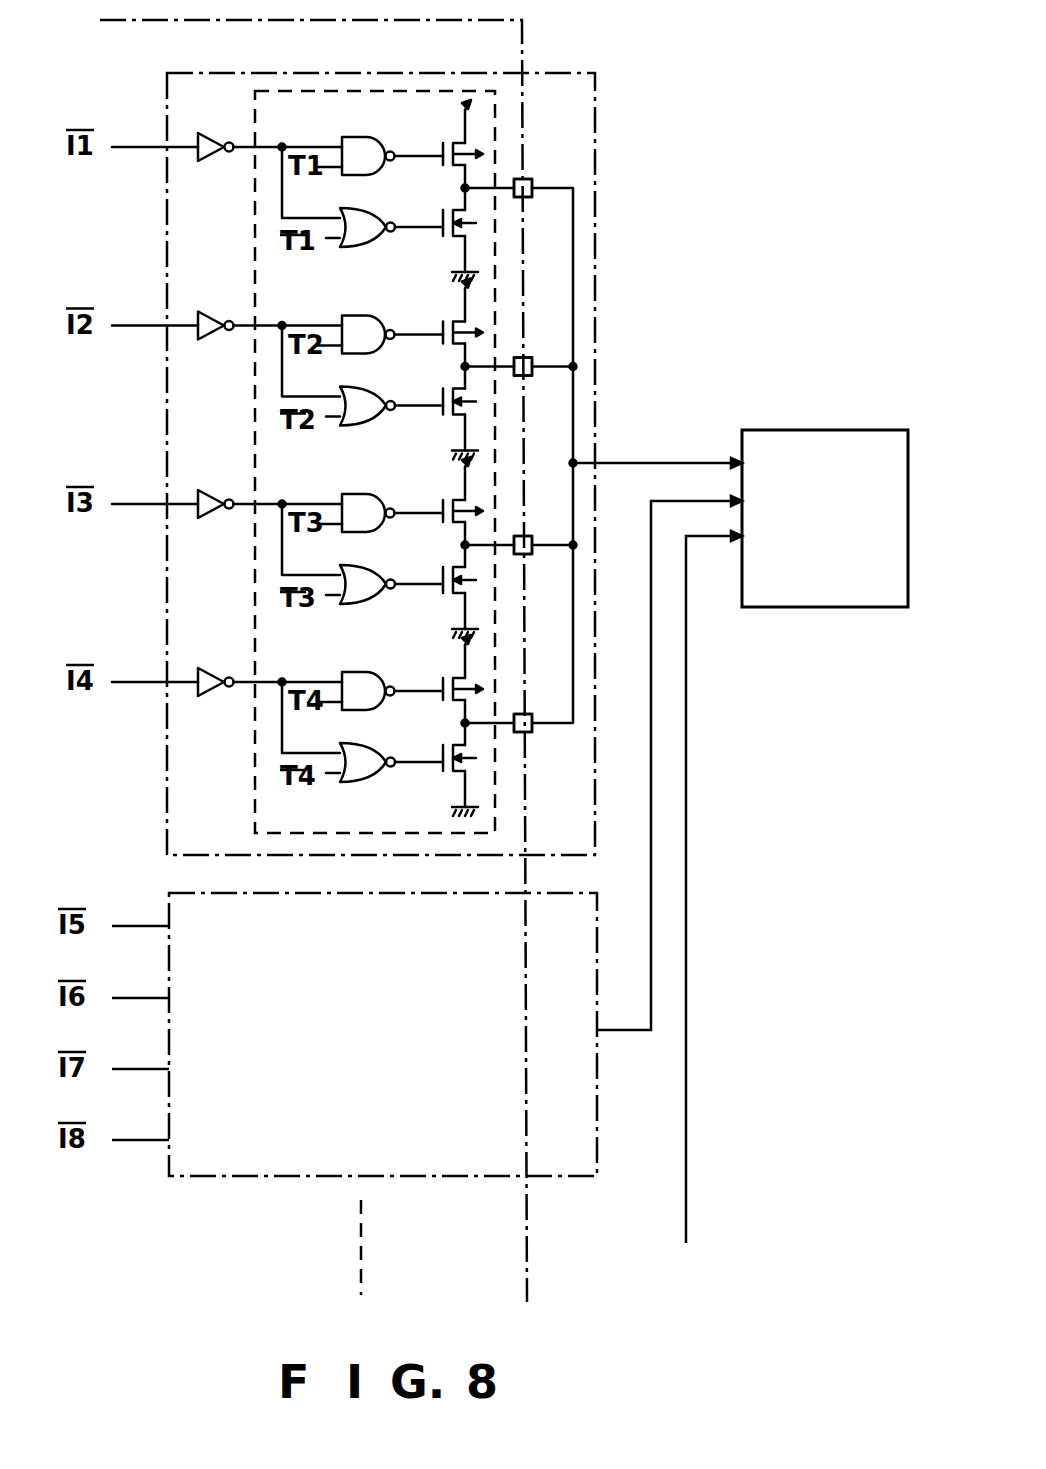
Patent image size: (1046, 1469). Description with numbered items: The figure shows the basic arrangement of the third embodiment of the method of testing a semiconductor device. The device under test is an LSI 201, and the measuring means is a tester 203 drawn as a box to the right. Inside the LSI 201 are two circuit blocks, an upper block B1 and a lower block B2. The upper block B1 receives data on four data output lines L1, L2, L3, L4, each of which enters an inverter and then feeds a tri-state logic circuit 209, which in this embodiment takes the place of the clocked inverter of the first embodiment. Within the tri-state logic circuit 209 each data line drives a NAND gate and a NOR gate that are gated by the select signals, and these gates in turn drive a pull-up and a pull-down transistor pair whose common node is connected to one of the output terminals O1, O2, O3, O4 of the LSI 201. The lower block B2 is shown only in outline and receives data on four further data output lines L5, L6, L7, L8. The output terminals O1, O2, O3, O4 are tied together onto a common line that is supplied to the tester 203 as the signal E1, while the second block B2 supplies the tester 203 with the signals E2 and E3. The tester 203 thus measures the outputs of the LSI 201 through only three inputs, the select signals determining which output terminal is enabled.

The LSI 201 is at (522, 56).
The tri-state logic circuit 209 is at (403, 90).
The tester 203 is at (836, 442).
The first circuit block B1 is at (596, 125).
The second circuit block B2 is at (598, 1160).
The data output line L1 is at (140, 147).
The data output line L2 is at (140, 326).
The data output line L3 is at (140, 504).
The data output line L4 is at (140, 682).
The data output line L5 is at (141, 926).
The data output line L6 is at (141, 998).
The data output line L7 is at (141, 1069).
The data output line L8 is at (141, 1140).
The output terminal O1 is at (543, 173).
The output terminal O2 is at (543, 352).
The output terminal O3 is at (543, 530).
The output terminal O4 is at (543, 708).
The signal supplied to the tester E1 is at (678, 466).
The signal supplied to the tester E2 is at (690, 758).
The signal supplied to the tester E3 is at (734, 883).